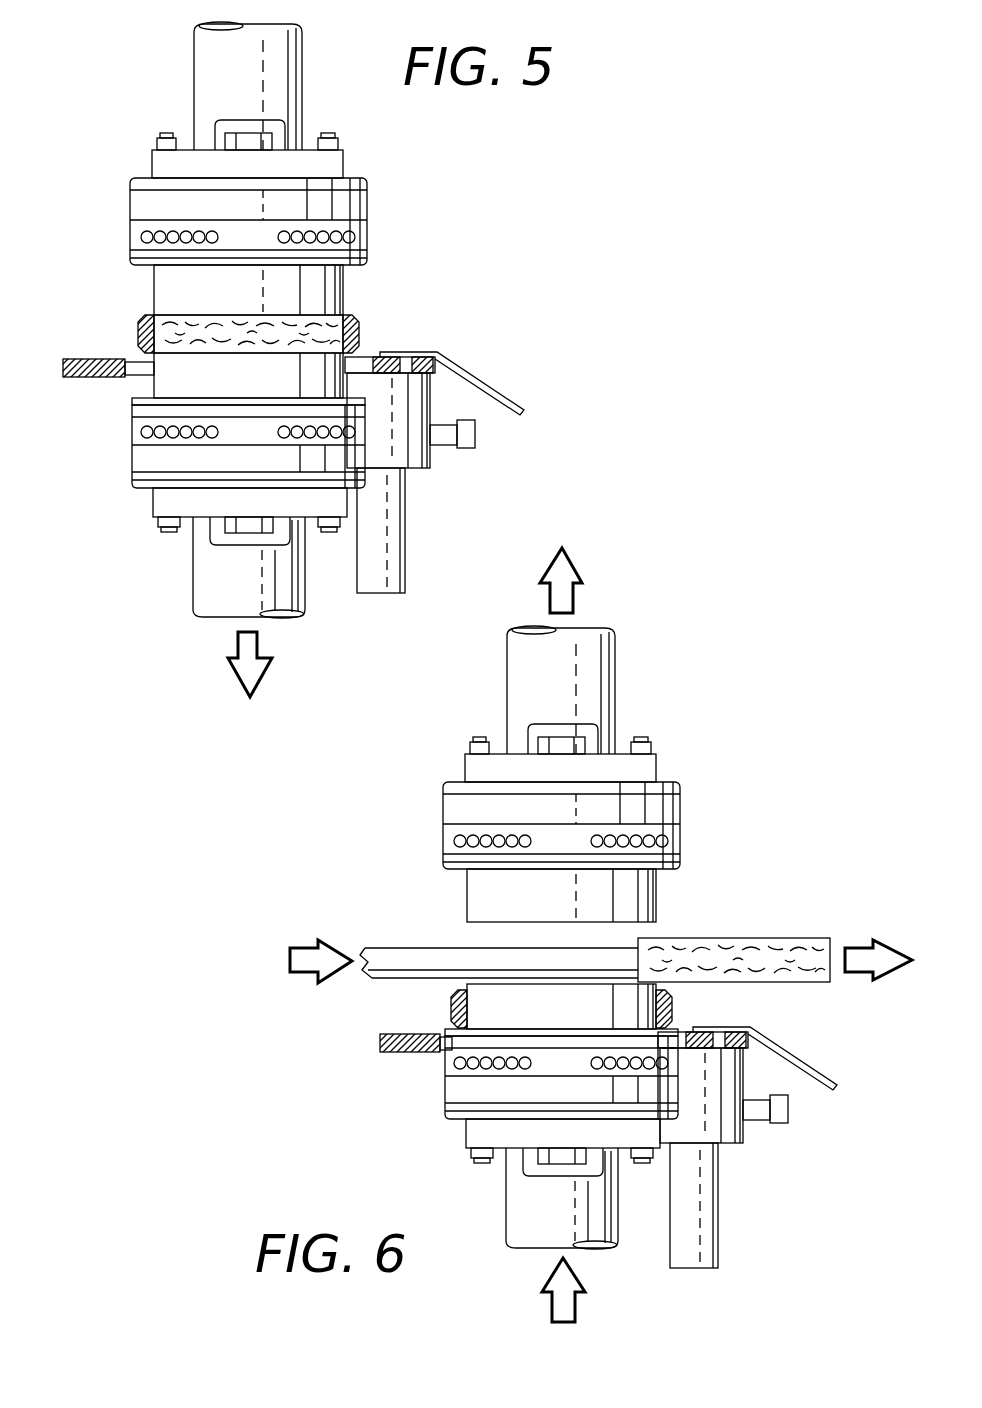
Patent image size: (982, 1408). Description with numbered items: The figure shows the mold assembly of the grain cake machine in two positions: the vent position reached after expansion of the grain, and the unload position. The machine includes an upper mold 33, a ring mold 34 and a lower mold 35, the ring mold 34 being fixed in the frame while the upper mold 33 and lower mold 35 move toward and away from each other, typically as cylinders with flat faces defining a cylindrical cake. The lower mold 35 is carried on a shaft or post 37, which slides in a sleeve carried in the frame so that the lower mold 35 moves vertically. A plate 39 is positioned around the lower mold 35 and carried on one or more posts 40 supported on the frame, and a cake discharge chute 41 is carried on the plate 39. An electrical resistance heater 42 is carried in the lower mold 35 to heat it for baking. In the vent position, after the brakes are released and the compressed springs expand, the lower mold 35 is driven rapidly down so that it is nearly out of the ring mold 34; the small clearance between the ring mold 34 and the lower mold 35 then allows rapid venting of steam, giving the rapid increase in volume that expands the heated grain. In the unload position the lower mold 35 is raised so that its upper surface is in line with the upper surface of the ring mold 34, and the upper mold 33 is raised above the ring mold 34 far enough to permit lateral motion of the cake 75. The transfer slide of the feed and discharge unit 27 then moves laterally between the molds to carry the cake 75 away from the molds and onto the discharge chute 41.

In FIG. 6, the feed and discharge unit 27 is at (388, 947).
In FIG. 6, the upper mold 33 is at (657, 895).
In FIG. 5, the ring mold 34 is at (364, 330).
In FIG. 6, the ring mold 34 is at (675, 1012).
In FIG. 5, the lower mold 35 is at (170, 384).
In FIG. 6, the lower mold 35 is at (483, 1000).
In FIG. 5, the shaft or post 37 is at (193, 565).
In FIG. 6, the shaft or post 37 is at (508, 1240).
In FIG. 5, the plate 39 is at (63, 368).
In FIG. 6, the plate 39 is at (380, 1042).
In FIG. 5, the post 40 is at (405, 530).
In FIG. 6, the post 40 is at (720, 1200).
In FIG. 5, the cake discharge chute 41 is at (490, 385).
In FIG. 6, the cake discharge chute 41 is at (805, 1055).
In FIG. 5, the electrical resistance heater 42 is at (140, 432).
In FIG. 6, the electrical resistance heater 42 is at (452, 1063).
In FIG. 6, the cake 75 is at (780, 937).